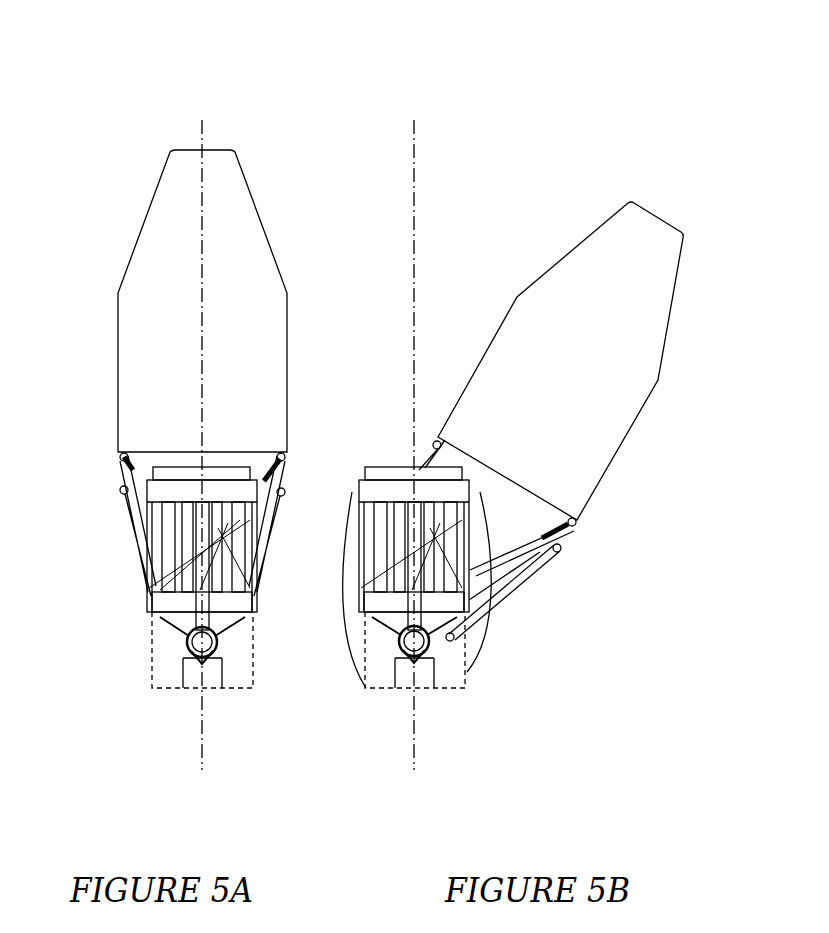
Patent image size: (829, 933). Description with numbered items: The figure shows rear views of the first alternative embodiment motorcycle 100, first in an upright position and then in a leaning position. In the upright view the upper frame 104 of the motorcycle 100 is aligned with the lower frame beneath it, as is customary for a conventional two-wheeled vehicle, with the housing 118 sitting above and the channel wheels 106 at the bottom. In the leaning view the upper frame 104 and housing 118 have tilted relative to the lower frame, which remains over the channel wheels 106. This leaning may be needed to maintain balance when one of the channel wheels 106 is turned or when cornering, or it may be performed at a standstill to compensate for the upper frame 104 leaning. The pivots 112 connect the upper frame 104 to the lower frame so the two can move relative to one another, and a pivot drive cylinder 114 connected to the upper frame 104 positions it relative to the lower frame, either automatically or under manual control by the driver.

In FIG. 5A, the motorcycle 100 is at (126, 56).
In FIG. 5B, the motorcycle 100 is at (666, 74).
In FIG. 5A, the housing 118 is at (235, 255).
In FIG. 5B, the housing 118 is at (592, 268).
In FIG. 5A, the upper frame 104 is at (126, 500).
In FIG. 5B, the upper frame 104 is at (540, 568).
In FIG. 5A, the pivots 112 is at (186, 657).
In FIG. 5B, the pivots 112 is at (396, 641).
In FIG. 5A, the channel wheels 106 is at (240, 662).
In FIG. 5B, the channel wheels 106 is at (380, 675).
In FIG. 5B, the pivot drive cylinder 114 is at (470, 625).